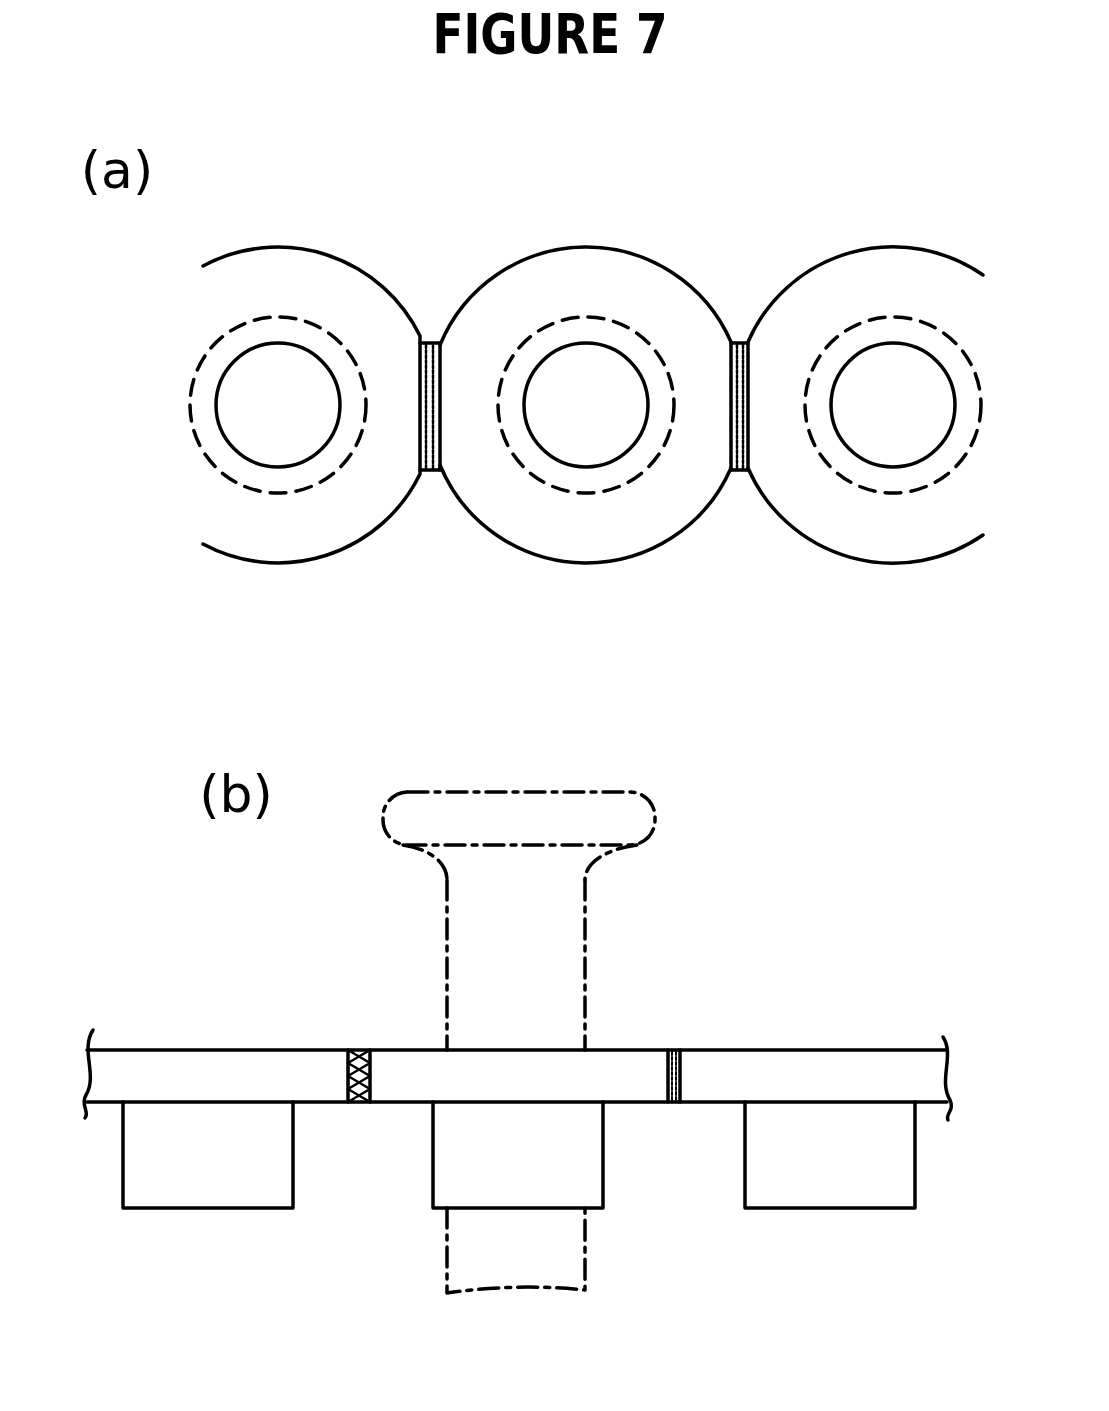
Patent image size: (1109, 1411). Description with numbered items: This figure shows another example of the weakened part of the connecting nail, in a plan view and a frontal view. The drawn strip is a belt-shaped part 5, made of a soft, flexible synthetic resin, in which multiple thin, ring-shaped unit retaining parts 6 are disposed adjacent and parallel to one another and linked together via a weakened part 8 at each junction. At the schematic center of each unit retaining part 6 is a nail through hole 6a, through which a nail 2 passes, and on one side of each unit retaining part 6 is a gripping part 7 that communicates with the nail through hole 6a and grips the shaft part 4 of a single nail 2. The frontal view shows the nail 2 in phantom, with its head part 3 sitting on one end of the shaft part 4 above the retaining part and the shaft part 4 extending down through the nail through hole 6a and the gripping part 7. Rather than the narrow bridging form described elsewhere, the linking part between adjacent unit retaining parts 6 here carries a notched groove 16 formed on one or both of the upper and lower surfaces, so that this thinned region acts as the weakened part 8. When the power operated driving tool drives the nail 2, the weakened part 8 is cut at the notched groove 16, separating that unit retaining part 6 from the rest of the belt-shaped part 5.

The nail 2 is at (578, 792).
The head part 3 is at (488, 820).
The shaft part 4 is at (537, 965).
The belt-shaped part 5 is at (855, 204).
The unit retaining part 6 is at (275, 293).
The nail through hole 6a is at (286, 456).
The gripping part 7 is at (308, 473).
The weakened part 8 is at (428, 472).
The notched groove 16 is at (422, 343).